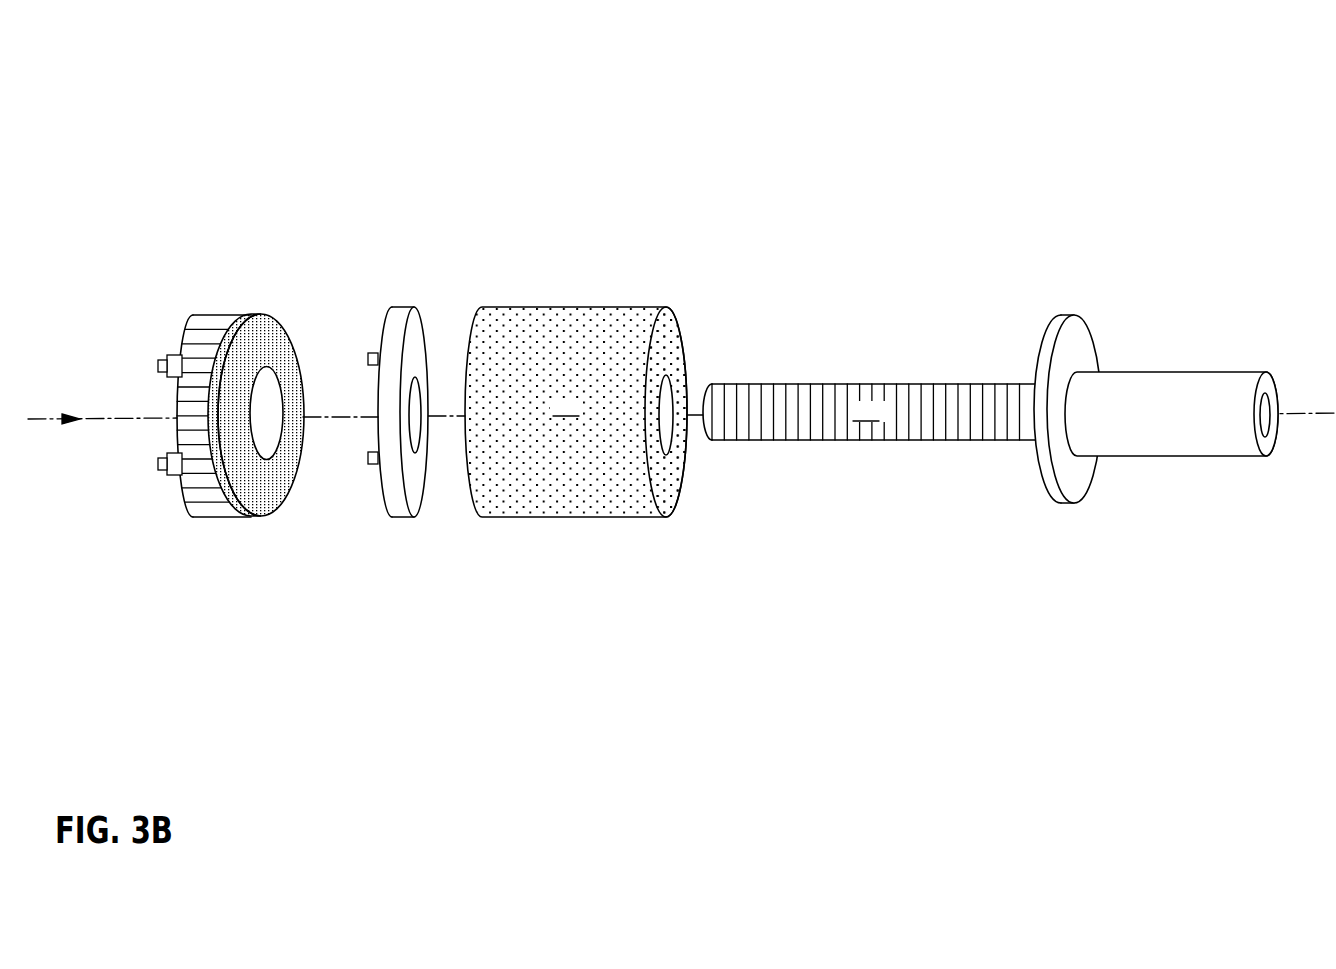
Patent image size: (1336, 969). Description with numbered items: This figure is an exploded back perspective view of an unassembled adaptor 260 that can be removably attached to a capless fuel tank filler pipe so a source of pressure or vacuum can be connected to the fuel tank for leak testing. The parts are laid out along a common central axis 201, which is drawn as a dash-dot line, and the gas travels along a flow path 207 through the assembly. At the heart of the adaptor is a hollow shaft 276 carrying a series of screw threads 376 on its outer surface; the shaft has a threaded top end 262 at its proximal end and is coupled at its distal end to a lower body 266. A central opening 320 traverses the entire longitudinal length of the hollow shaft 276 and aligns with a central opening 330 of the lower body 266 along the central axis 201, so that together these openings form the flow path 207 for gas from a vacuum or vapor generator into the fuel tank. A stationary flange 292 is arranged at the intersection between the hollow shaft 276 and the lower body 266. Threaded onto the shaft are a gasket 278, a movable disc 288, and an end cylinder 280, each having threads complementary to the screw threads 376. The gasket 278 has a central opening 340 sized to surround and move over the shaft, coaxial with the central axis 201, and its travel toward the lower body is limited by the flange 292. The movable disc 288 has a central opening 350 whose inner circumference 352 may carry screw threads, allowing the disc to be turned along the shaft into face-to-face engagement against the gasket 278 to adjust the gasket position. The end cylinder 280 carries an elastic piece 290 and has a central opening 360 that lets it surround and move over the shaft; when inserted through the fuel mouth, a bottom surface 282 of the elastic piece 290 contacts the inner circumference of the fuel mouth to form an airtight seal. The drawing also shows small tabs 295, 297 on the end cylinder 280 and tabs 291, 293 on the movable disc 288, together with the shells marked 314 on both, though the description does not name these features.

The central axis 201 is at (125, 418).
The flow path 207 is at (40, 420).
The adaptor 260 is at (604, 130).
The threaded top end 262 is at (275, 457).
The lower body 266 is at (1153, 421).
The hollow shaft 276 is at (879, 421).
The gasket 278 is at (579, 416).
The end cylinder 280 is at (227, 601).
The bottom surface 282 is at (263, 495).
The movable disc 288 is at (403, 568).
The elastic piece 290 is at (222, 315).
The lower tab of end disk 291 is at (368, 457).
The flange 292 is at (1062, 503).
The upper tab of end disk 293 is at (368, 360).
The lower terminal tab 295 is at (160, 465).
The upper terminal tab 297 is at (160, 364).
The housing shell 314 is at (213, 503).
The central opening of hollow shaft 320 is at (699, 408).
The central opening of lower body 330 is at (1267, 403).
The central opening of gasket 340 is at (662, 405).
The central opening of movable disc 350 is at (415, 407).
The inner circumference of movable disc 352 is at (415, 452).
The central opening of end cylinder 360 is at (263, 402).
The screw threads 376 is at (898, 432).